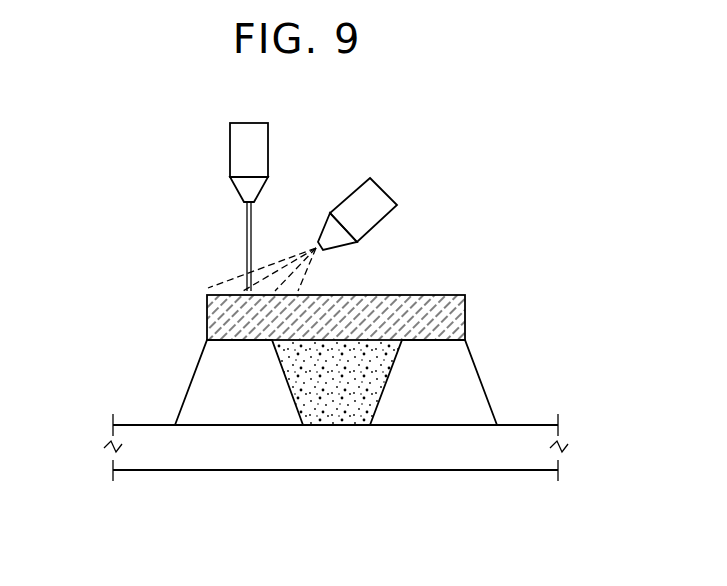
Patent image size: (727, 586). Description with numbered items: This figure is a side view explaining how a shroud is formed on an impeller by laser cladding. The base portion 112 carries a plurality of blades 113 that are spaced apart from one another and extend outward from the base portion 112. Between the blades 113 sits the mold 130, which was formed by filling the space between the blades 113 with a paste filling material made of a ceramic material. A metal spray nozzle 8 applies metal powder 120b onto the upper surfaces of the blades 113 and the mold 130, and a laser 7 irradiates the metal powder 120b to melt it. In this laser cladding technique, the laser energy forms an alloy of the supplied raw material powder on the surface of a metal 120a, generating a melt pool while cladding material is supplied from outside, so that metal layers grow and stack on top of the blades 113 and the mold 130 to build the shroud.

The laser 7 is at (263, 149).
The metal spray nozzle 8 is at (378, 218).
The base portion 112 is at (341, 458).
The blades 113 is at (198, 390).
The metal 120a is at (458, 319).
The metal powder 120b is at (232, 285).
The mold 130 is at (306, 390).